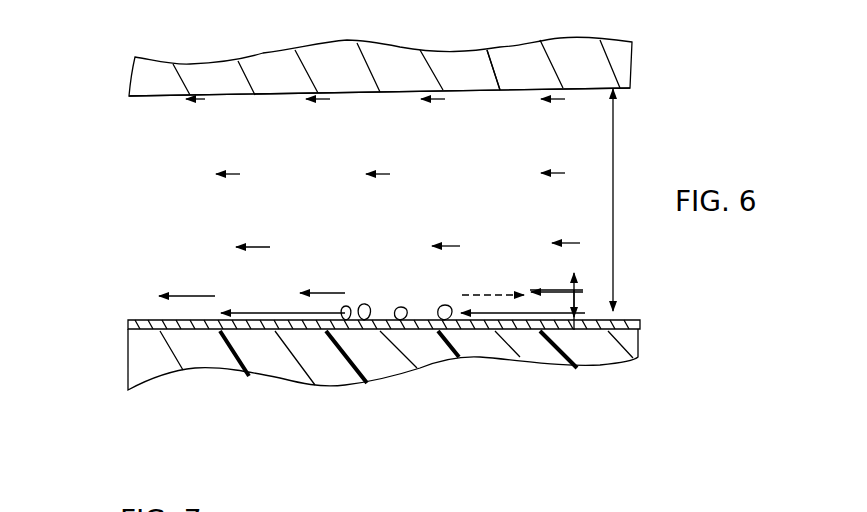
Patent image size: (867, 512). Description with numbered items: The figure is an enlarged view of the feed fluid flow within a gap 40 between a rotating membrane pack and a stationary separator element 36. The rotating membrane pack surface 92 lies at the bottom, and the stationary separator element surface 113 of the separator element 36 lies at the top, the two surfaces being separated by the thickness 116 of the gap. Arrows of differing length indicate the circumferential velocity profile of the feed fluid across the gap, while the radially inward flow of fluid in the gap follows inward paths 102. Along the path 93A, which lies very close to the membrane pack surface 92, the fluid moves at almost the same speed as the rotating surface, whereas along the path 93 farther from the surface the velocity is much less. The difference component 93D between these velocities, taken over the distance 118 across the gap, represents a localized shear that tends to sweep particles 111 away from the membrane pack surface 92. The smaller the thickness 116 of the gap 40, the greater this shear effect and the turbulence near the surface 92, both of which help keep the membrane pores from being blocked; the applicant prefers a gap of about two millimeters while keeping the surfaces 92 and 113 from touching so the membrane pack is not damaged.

The separator element 36 is at (636, 61).
The inward path 102 is at (262, 123).
The stationary separator element surface 113 is at (466, 101).
The thickness of the gap 116 is at (615, 152).
The distance along the gap 118 is at (573, 299).
The gap 40 is at (140, 200).
The path very close to the membrane pack surface 93A is at (258, 313).
The path 93 is at (190, 296).
The difference component 93D is at (462, 296).
The membrane pack surface 92 is at (344, 332).
The particles 111 is at (420, 323).